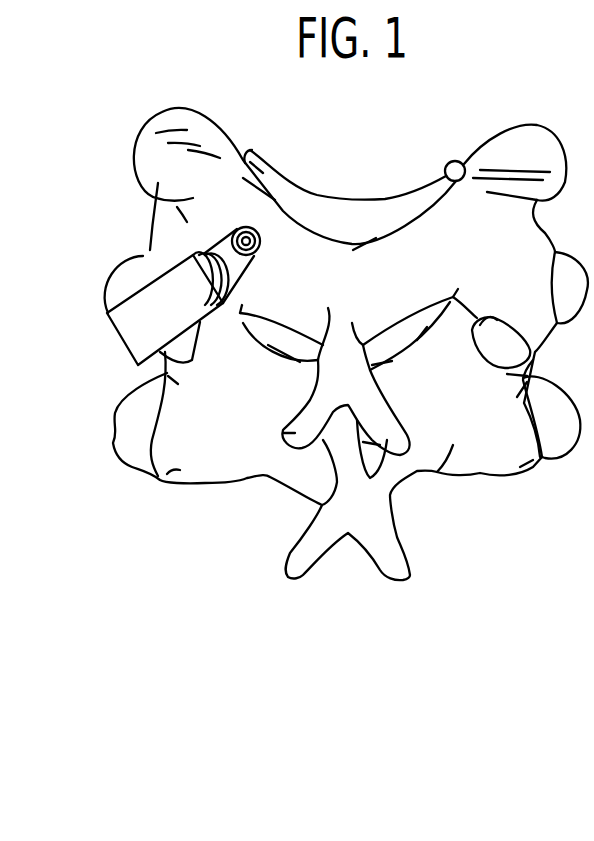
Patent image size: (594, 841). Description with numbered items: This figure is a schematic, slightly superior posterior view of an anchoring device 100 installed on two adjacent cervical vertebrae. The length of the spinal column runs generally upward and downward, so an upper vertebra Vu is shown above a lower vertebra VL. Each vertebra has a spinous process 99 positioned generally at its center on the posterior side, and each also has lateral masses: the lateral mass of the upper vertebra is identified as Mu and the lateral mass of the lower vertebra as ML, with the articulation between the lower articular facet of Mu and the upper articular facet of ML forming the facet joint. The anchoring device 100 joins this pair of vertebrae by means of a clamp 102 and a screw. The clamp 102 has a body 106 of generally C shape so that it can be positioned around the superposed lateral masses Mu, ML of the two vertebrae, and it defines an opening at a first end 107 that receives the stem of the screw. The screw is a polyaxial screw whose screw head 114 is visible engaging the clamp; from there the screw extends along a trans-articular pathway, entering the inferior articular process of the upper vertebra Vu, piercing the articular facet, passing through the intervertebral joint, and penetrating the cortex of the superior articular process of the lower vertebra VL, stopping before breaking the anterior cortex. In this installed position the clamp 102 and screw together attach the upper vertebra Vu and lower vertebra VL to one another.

The anchoring device 100 is at (133, 187).
The clamp 102 is at (163, 257).
The body 106 is at (140, 329).
The first end 107 is at (224, 302).
The screw head 114 is at (263, 226).
The spinous process 99 is at (283, 430).
The upper vertebra Vu is at (550, 230).
The lower vertebra VL is at (463, 492).
The lateral mass of the upper vertebra Mu is at (193, 232).
The lateral mass of the lower vertebra ML is at (202, 385).